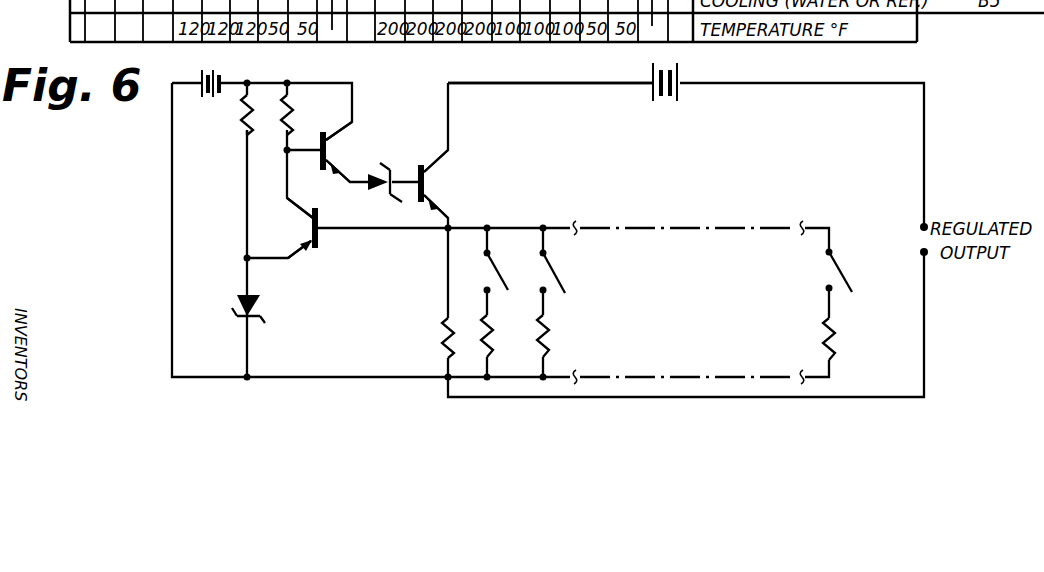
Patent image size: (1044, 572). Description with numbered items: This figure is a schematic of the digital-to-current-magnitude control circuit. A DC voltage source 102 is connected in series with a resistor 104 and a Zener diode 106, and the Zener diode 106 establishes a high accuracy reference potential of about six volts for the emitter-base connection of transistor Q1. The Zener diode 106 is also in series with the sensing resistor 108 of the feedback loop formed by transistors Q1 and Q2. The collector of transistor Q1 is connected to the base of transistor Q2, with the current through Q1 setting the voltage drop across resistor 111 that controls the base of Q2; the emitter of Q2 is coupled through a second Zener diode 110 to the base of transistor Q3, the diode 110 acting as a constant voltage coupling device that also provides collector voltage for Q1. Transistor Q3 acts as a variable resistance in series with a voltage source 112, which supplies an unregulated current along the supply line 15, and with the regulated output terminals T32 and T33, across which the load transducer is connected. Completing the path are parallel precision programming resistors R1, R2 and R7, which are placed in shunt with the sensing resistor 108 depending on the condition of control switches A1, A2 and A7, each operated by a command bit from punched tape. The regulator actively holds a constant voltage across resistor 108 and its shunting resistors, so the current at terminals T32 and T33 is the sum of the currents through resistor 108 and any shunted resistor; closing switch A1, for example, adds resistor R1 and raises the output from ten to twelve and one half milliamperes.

The DC voltage source 102 is at (208, 94).
The resistor 104 is at (250, 98).
The resistor 111 is at (290, 113).
The Zener diode 110 is at (380, 163).
The Zener diode 106 is at (257, 303).
The sensing resistor 108 is at (445, 333).
The supply line 15 is at (570, 86).
The voltage source 112 is at (652, 95).
The transistor Q1 is at (318, 242).
The transistor Q2 is at (322, 172).
The transistor Q3 is at (428, 180).
The control switch A1 is at (500, 272).
The control switch A2 is at (558, 275).
The control switch A7 is at (834, 267).
The precision programming resistor R1 is at (493, 328).
The precision programming resistor R2 is at (549, 328).
The precision programming resistor R7 is at (835, 338).
The regulated output terminal T33 is at (921, 228).
The regulated output terminal T32 is at (921, 252).